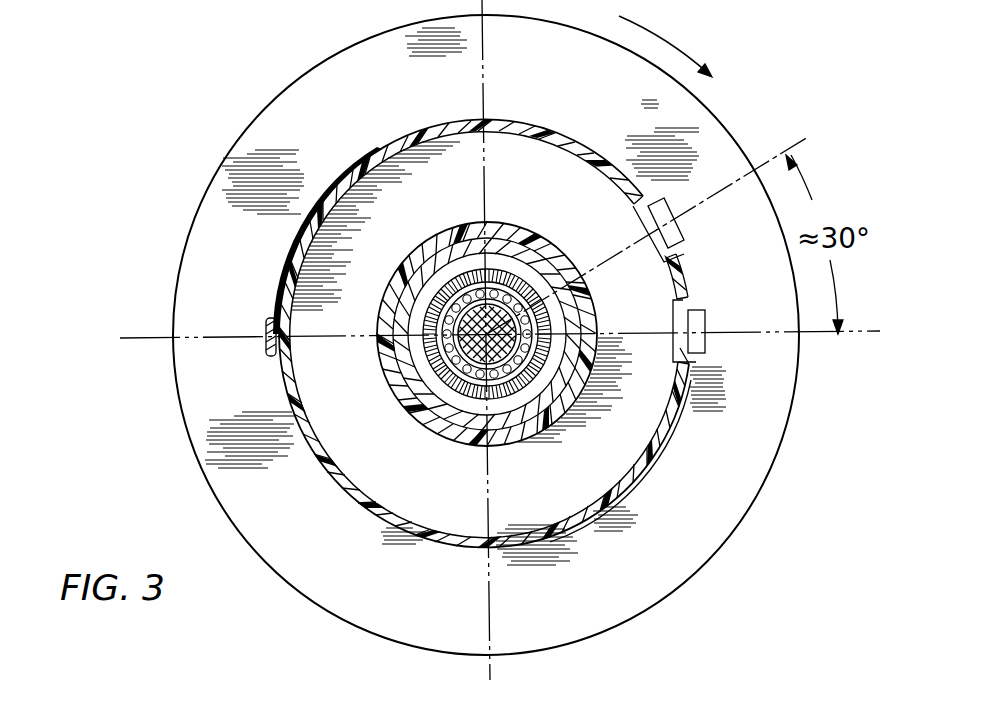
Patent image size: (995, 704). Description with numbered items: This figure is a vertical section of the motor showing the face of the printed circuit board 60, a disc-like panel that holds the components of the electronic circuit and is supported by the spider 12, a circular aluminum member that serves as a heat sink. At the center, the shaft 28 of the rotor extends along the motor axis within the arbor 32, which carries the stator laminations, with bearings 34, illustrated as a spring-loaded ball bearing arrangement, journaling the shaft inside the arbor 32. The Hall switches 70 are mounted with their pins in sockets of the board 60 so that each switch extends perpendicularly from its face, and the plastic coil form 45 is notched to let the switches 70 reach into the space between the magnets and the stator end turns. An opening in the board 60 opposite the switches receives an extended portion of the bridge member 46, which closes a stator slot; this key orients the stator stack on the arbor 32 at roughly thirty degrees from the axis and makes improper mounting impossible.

The spider 12 is at (512, 418).
The shaft 28 is at (500, 316).
The arbor 32 is at (428, 377).
The bearings 34 is at (447, 288).
The plastic coil form 45 is at (359, 492).
The bridge member 46 is at (266, 330).
The printed circuit board 60 is at (732, 506).
The Hall switches 70 is at (683, 236).